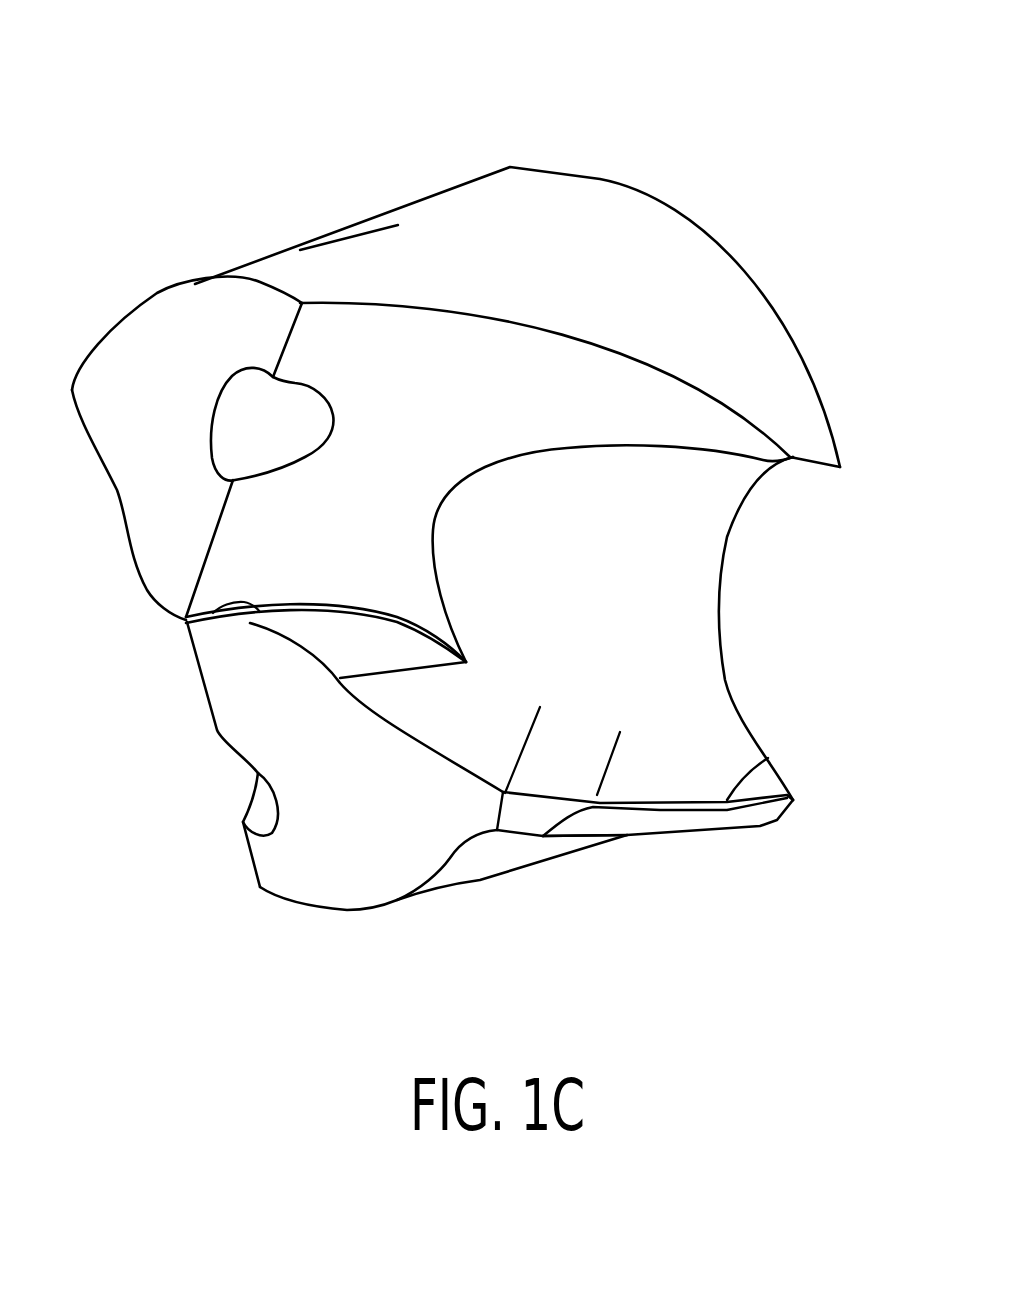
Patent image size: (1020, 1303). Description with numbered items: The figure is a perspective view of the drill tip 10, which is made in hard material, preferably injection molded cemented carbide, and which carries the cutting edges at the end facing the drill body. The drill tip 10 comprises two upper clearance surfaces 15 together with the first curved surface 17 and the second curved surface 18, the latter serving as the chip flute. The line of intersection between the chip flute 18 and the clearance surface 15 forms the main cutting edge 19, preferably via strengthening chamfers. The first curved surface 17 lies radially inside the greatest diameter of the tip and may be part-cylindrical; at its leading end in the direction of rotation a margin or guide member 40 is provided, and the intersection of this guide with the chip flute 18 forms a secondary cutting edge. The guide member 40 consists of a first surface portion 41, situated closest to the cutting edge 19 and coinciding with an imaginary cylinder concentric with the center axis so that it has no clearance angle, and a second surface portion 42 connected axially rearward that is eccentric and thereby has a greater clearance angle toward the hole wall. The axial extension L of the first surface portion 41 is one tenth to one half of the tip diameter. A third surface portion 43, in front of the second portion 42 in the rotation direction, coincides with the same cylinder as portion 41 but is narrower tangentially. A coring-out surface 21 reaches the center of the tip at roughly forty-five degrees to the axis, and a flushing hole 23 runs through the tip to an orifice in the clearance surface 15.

The drill tip 10 is at (320, 168).
The upper clearance surface 15 is at (165, 513).
The first curved surface 17 is at (615, 263).
The second curved surface 18 is at (630, 552).
The main cutting edge 19 is at (400, 727).
The coring-out surface 21 is at (195, 636).
The flushing hole 23 is at (243, 403).
The guide member 40 is at (622, 862).
The first surface portion 41 is at (527, 813).
The second surface portion 42 is at (692, 818).
The third surface portion 43 is at (727, 793).
The axial extension of the first surface portion L is at (608, 753).